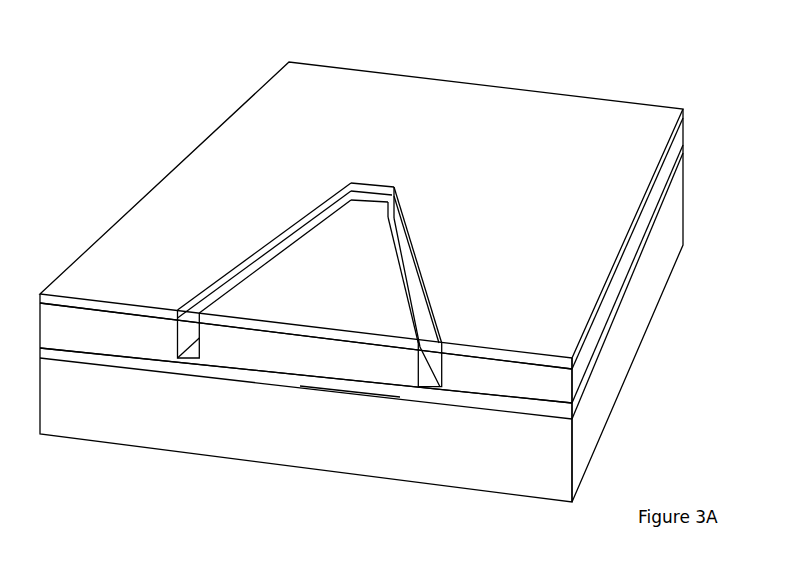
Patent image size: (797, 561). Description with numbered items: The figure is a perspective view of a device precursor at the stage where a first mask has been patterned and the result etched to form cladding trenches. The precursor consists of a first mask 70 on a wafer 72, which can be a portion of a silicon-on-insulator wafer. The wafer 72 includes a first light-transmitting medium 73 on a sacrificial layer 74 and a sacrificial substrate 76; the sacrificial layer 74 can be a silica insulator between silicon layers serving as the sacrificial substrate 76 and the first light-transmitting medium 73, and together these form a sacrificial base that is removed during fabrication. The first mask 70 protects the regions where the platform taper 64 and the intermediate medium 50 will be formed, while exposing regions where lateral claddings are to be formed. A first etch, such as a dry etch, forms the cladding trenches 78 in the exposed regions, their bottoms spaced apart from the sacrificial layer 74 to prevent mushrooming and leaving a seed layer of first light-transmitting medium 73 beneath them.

The first mask 70 is at (425, 95).
The wafer 72 is at (686, 117).
The intermediate medium 50 is at (135, 343).
The first light-transmitting medium 73 is at (290, 362).
The sacrificial layer 74 is at (385, 392).
The platform taper 64 is at (347, 397).
The sacrificial substrate 76 is at (360, 462).
The cladding trenches 78 is at (177, 348).